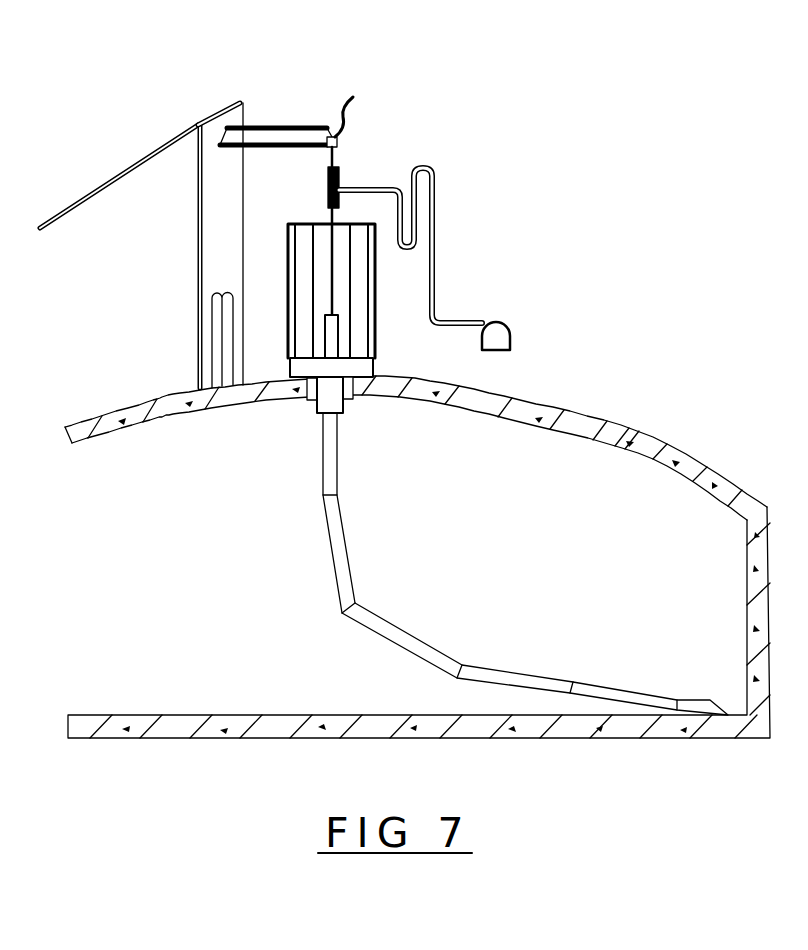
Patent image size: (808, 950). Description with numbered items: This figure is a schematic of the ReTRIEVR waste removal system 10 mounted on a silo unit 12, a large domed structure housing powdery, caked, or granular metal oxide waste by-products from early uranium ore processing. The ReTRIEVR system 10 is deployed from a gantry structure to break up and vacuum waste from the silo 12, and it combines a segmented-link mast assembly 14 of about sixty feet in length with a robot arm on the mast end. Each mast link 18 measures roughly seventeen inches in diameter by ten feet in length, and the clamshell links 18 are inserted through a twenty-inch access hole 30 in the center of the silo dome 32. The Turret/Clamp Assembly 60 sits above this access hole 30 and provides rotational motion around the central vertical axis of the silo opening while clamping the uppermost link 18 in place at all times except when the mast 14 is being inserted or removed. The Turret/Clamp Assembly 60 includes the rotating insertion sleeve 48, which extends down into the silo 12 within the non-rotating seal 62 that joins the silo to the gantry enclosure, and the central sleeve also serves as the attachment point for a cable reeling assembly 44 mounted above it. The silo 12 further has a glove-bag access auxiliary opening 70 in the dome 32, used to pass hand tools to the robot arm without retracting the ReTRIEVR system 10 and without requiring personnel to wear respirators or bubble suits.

The ReTRIEVR robotic system 10 is at (533, 157).
The Silo-3 site 12 is at (708, 575).
The segmented-link mast assembly 14 is at (405, 605).
The mast link 18 is at (210, 330).
The access hole 30 is at (480, 240).
The Silo-3 dome 32 is at (653, 448).
The cable reeling assembly 44 is at (338, 175).
The insertion sleeve 48 is at (315, 413).
The Turret/Clamp Assembly 60 is at (373, 363).
The non-rotating seal 62 is at (298, 403).
The glove-bag access auxiliary silo opening 70 is at (627, 440).